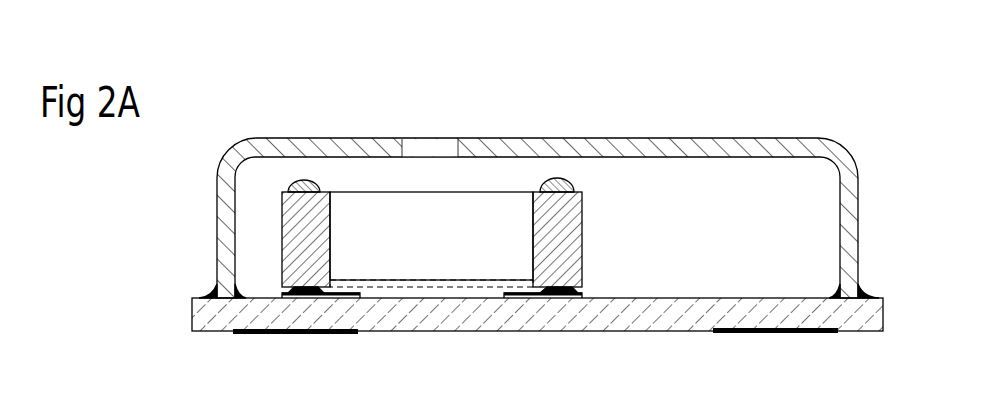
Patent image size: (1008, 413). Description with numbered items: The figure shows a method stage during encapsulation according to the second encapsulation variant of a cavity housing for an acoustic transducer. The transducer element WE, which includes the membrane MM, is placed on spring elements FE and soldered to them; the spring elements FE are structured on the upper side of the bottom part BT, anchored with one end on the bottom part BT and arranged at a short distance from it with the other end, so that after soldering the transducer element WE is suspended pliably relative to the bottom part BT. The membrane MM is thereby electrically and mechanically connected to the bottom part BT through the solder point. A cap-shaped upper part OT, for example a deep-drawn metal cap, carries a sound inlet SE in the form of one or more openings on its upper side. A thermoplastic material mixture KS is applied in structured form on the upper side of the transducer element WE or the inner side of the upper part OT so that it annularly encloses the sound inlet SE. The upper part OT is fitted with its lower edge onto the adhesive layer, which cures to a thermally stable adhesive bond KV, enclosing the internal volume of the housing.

The upper part OT is at (670, 150).
The sound inlet SE is at (430, 150).
The thermoplastic material mixture KS is at (560, 180).
The transducer element WE is at (570, 230).
The membrane MM is at (433, 280).
The adhesive bond KV is at (217, 290).
The spring elements FE is at (352, 297).
The bottom part BT is at (487, 320).